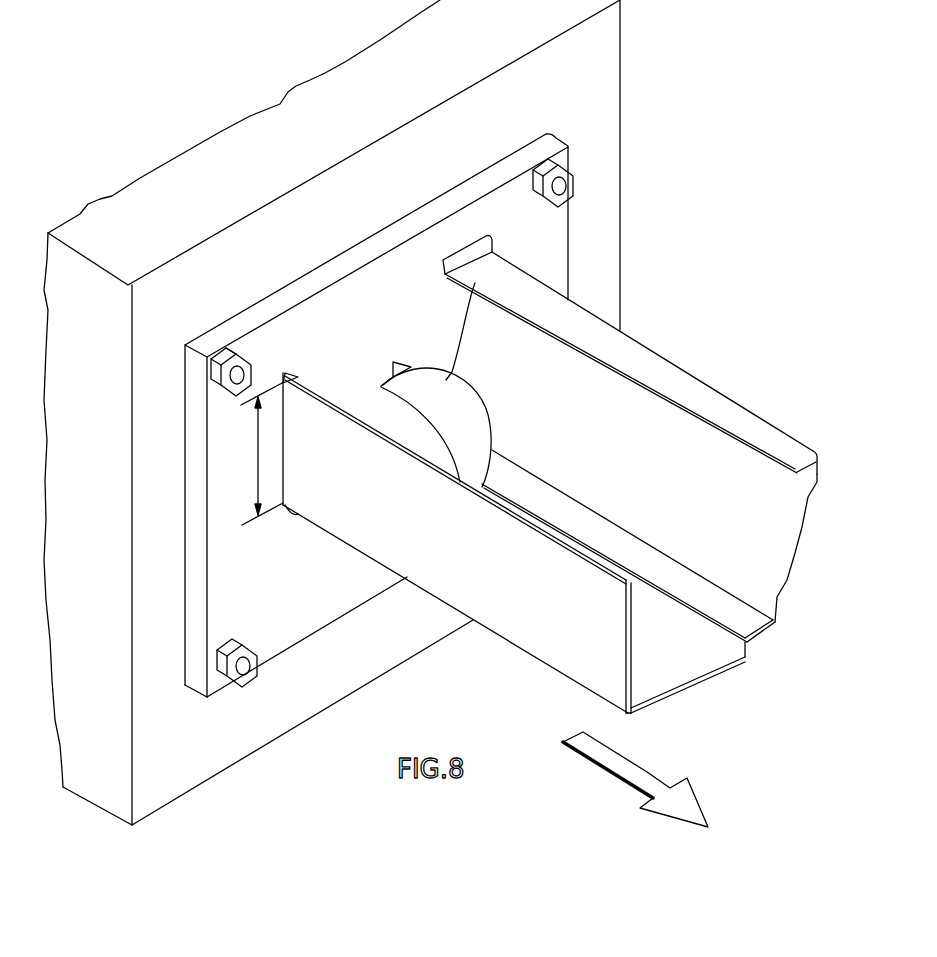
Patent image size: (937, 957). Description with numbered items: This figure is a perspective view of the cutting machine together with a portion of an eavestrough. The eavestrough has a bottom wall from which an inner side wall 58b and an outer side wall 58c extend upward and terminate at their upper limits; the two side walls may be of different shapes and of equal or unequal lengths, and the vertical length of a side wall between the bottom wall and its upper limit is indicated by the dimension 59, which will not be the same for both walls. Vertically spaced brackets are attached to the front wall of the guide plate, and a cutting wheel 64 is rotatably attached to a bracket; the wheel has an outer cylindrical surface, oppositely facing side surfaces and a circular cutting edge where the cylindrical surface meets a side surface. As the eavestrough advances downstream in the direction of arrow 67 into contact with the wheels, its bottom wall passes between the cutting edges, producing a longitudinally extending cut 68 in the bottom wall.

The inner side wall 58b is at (508, 541).
The outer side wall 58c is at (698, 457).
The vertical length of side wall 59 is at (262, 453).
The cutting wheel 64 is at (486, 416).
The arrow 67 is at (648, 772).
The longitudinally extending cut 68 is at (743, 652).